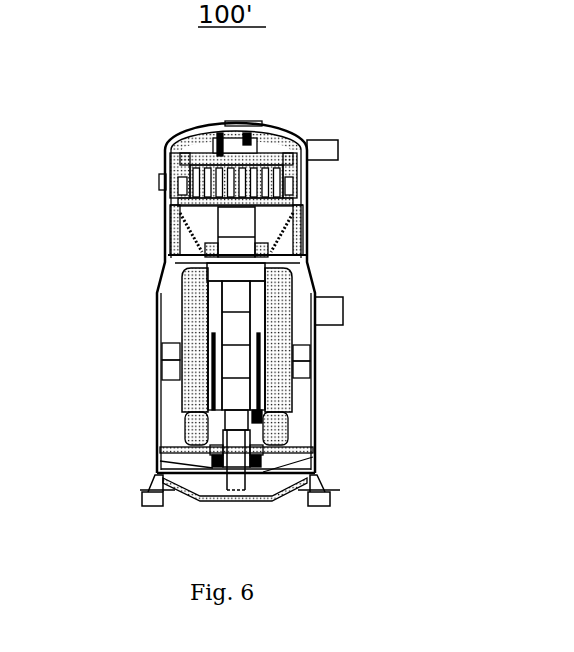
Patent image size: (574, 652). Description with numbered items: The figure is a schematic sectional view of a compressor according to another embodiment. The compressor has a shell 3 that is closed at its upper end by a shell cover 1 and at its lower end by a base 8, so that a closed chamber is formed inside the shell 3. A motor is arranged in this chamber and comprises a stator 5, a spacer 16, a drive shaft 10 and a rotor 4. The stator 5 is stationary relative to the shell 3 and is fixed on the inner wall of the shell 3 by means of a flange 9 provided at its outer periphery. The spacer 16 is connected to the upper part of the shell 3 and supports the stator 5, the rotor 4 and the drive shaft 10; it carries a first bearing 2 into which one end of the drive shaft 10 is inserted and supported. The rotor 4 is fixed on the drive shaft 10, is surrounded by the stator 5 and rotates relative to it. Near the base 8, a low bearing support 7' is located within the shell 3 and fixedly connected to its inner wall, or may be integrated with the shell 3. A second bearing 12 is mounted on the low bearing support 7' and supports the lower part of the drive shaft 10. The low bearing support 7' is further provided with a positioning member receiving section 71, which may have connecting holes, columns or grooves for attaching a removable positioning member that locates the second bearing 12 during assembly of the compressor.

The shell cover 1 is at (293, 133).
The first bearing 2 is at (307, 215).
The shell 3 is at (312, 265).
The rotor 4 is at (252, 337).
The stator 5 is at (278, 383).
The flange 9 is at (158, 357).
The drive shaft 10 is at (170, 396).
The second bearing 12 is at (183, 443).
The spacer 16 is at (165, 213).
The positioning member receiving section 71 is at (258, 449).
The low bearing support 7' is at (300, 464).
The base 8 is at (263, 497).